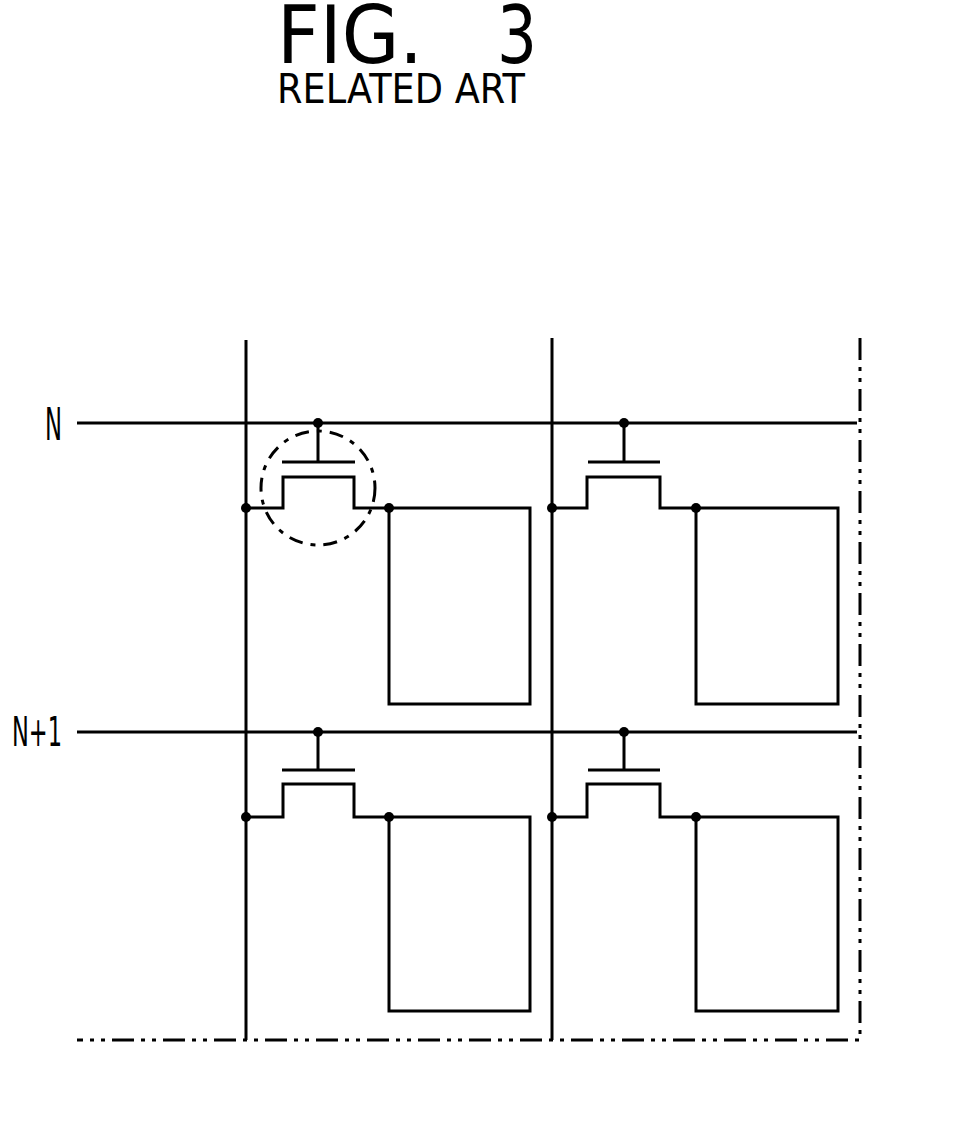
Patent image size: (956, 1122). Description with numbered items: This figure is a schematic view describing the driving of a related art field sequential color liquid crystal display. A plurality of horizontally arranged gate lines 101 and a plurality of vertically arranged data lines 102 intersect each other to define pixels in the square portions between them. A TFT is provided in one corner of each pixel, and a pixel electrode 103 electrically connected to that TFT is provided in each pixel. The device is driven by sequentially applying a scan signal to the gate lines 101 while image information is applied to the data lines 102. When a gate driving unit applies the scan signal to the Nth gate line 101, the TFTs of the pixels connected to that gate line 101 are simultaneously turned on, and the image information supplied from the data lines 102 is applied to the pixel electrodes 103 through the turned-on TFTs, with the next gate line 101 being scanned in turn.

The gate line 101 is at (145, 425).
The data line 102 is at (246, 367).
The pixel electrode 103 is at (407, 620).
The thin film transistor TFT is at (370, 458).